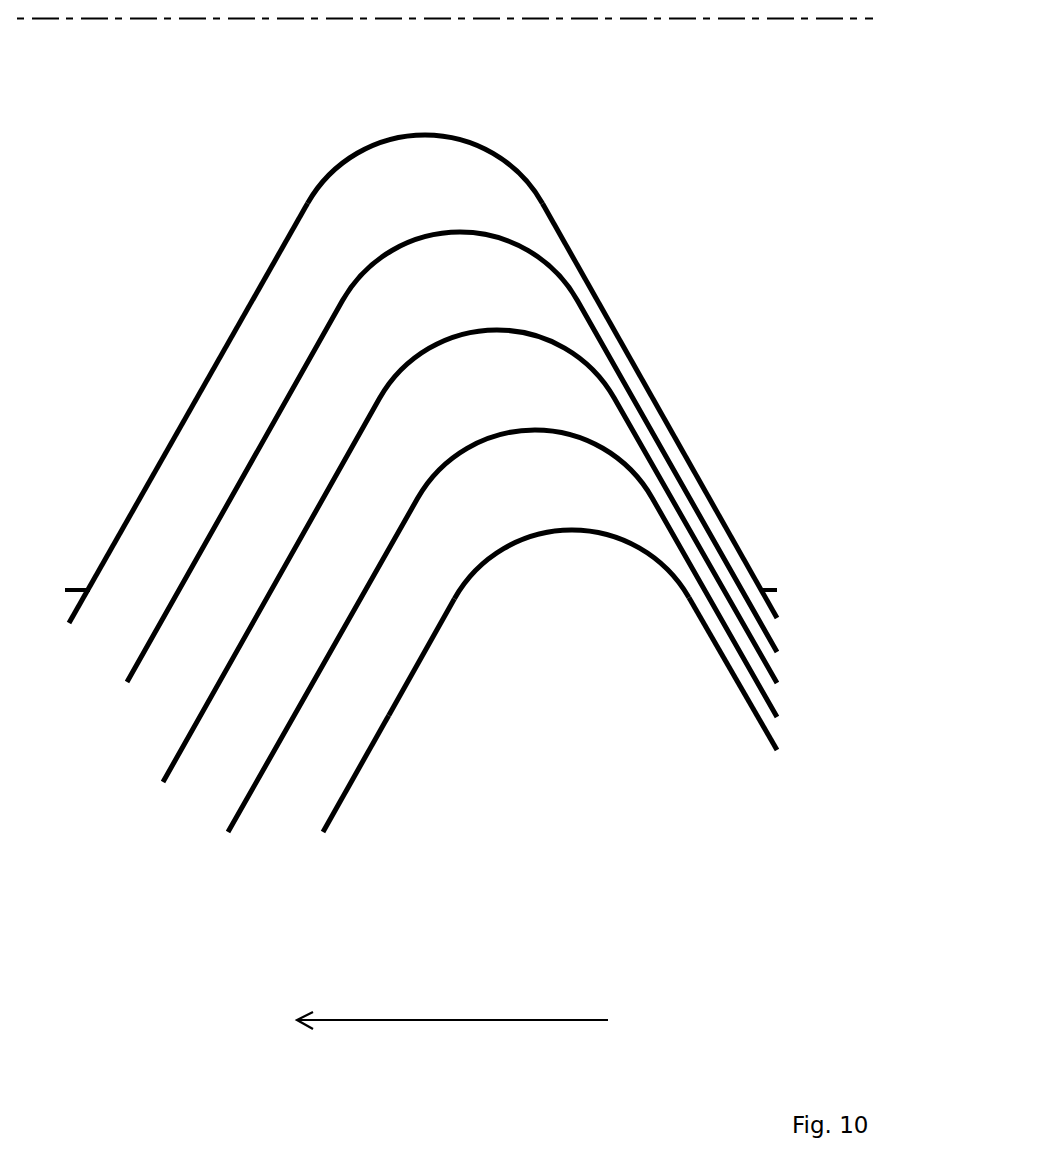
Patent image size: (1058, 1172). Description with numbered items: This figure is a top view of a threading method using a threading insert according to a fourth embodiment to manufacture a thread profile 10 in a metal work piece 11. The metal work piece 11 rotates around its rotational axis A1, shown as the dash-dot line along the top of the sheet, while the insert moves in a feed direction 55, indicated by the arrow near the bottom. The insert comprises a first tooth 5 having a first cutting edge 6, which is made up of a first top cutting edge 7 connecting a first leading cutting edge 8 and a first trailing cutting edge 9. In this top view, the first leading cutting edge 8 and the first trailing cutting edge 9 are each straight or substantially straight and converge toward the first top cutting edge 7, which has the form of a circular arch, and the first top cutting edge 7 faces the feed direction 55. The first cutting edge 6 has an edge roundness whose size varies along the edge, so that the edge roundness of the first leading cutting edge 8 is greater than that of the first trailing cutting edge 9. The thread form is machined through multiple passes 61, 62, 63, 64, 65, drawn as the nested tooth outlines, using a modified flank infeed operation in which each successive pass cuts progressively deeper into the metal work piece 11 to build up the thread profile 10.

The rotational axis A1 is at (479, 27).
The first tooth 5 is at (405, 494).
The first cutting edge 6 is at (470, 585).
The first top cutting edge 7 is at (573, 533).
The first leading cutting edge 8 is at (342, 807).
The first trailing cutting edge 9 is at (757, 720).
The thread profile 10 is at (311, 192).
The metal work piece 11 is at (660, 411).
The feed direction 55 is at (452, 1048).
The pass 61 is at (535, 723).
The pass 62 is at (485, 658).
The pass 63 is at (457, 582).
The pass 64 is at (437, 483).
The pass 65 is at (405, 401).